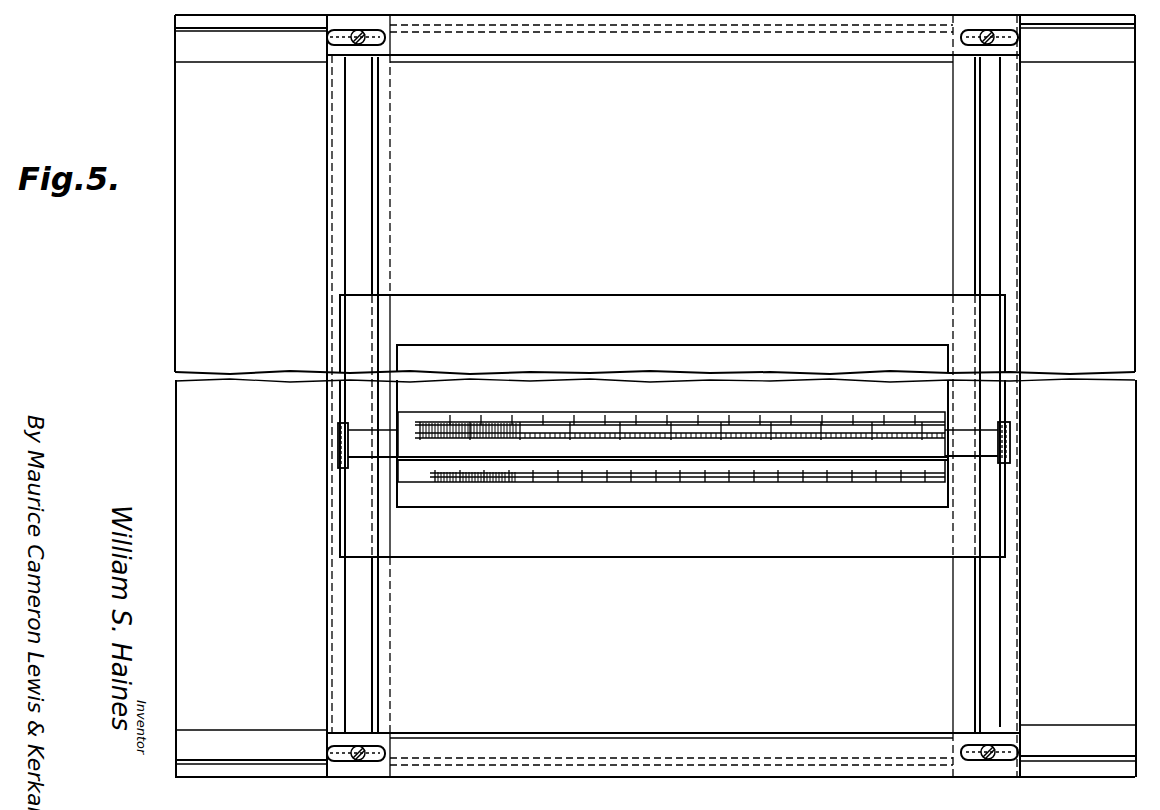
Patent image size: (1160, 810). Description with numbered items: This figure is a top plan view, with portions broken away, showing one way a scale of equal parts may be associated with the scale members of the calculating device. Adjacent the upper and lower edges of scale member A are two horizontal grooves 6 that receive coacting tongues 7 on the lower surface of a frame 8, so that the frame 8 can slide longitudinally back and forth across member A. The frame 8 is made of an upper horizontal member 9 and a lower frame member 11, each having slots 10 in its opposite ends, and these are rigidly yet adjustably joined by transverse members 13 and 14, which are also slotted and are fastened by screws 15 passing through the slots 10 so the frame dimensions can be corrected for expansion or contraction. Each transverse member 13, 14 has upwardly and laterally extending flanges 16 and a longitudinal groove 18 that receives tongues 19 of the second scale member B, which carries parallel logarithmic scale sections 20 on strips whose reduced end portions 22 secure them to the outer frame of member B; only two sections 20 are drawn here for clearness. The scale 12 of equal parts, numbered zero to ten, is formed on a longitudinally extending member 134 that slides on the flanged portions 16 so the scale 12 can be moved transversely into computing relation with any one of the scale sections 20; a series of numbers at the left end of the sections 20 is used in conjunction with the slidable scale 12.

The grooves 6 is at (1098, 22).
The tongues 7 is at (797, 27).
The frame 8 is at (710, 48).
The upper horizontal member 9 is at (385, 485).
The slots 10 is at (380, 33).
The lower frame member 11 is at (498, 734).
The scale of equal parts 12 is at (771, 443).
The transverse member 13 is at (357, 630).
The transverse member 14 is at (986, 184).
The screws 15 is at (363, 20).
The flanges 16 is at (328, 123).
The groove 18 is at (970, 147).
The tongues 19 is at (374, 327).
The scale sections 20 is at (634, 423).
The reduced portions 22 is at (946, 424).
The scale housing 134 is at (410, 436).
The scale member A is at (660, 372).
The second scale member B is at (726, 457).